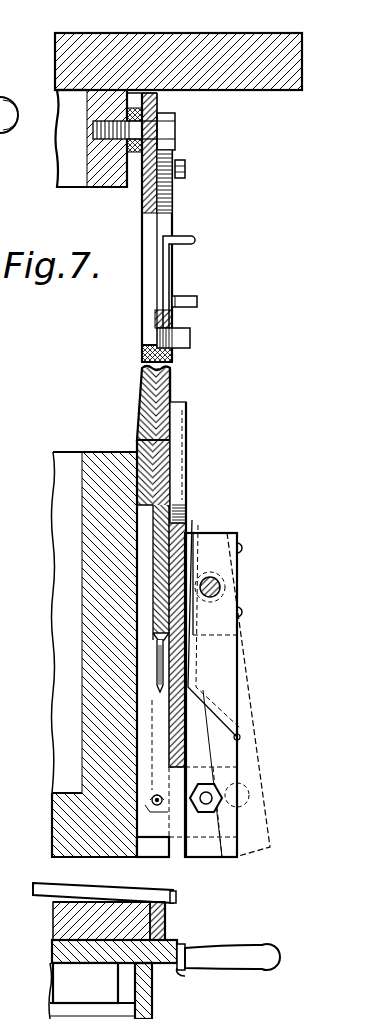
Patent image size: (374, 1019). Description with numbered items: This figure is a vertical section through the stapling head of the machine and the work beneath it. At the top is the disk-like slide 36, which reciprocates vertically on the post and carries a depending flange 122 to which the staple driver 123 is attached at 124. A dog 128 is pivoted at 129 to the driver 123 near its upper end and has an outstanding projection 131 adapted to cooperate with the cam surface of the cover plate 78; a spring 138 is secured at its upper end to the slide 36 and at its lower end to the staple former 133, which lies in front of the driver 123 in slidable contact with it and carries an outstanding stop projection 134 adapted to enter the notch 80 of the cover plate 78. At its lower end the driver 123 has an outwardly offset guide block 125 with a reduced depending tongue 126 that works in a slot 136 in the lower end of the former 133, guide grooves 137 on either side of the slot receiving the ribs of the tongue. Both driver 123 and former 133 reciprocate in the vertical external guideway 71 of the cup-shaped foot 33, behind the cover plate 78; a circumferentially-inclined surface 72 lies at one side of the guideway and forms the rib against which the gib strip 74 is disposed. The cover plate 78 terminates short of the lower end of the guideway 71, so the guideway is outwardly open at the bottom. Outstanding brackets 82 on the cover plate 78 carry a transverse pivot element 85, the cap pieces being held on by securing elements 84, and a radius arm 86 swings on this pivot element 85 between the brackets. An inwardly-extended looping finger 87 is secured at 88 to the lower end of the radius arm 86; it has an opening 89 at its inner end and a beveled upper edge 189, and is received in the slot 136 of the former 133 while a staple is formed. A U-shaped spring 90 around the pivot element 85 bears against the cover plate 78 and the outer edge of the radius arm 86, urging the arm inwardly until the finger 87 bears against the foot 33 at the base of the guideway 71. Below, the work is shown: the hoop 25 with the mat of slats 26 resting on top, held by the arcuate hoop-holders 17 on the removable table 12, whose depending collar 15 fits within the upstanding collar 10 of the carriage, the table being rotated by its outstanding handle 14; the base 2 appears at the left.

The slide 36 is at (183, 45).
The brackets 82 is at (6, 90).
The depending flange 122 is at (98, 160).
The staple driver 123 is at (147, 180).
The attachment point 124 is at (172, 120).
The dog 128 is at (170, 207).
The pivot 129 is at (185, 165).
The spring 138 is at (190, 241).
The outstanding projection 131 is at (192, 300).
The stop projection 134 is at (182, 338).
The staple former 133 is at (172, 372).
The guide block 125 is at (165, 460).
The notch 80 is at (180, 428).
The U-shaped spring 90 is at (185, 515).
The depending tongue 126 is at (158, 600).
The slot 136 is at (152, 663).
The guide grooves 137 is at (160, 665).
The cup-shaped foot 33 is at (108, 456).
The guideway 71 is at (143, 552).
The gib strip 74 is at (172, 852).
The pivot element 85 is at (218, 585).
The securing elements 84 is at (241, 548).
The radius arm 86 is at (220, 668).
The securing point 88 is at (218, 792).
The looping finger 87 is at (160, 823).
The opening 89 is at (148, 808).
The cover plate 78 is at (180, 702).
The beveled upper edge 189 is at (150, 782).
The base 2 is at (150, 800).
The circumferentially-inclined surface 72 is at (0, 672).
The slats 26 is at (176, 894).
The hoop-holders 17 is at (58, 928).
The hoop 25 is at (163, 918).
The table 12 is at (65, 950).
The collar 10 is at (152, 1015).
The handle 14 is at (265, 950).
The depending collar 15 is at (118, 985).